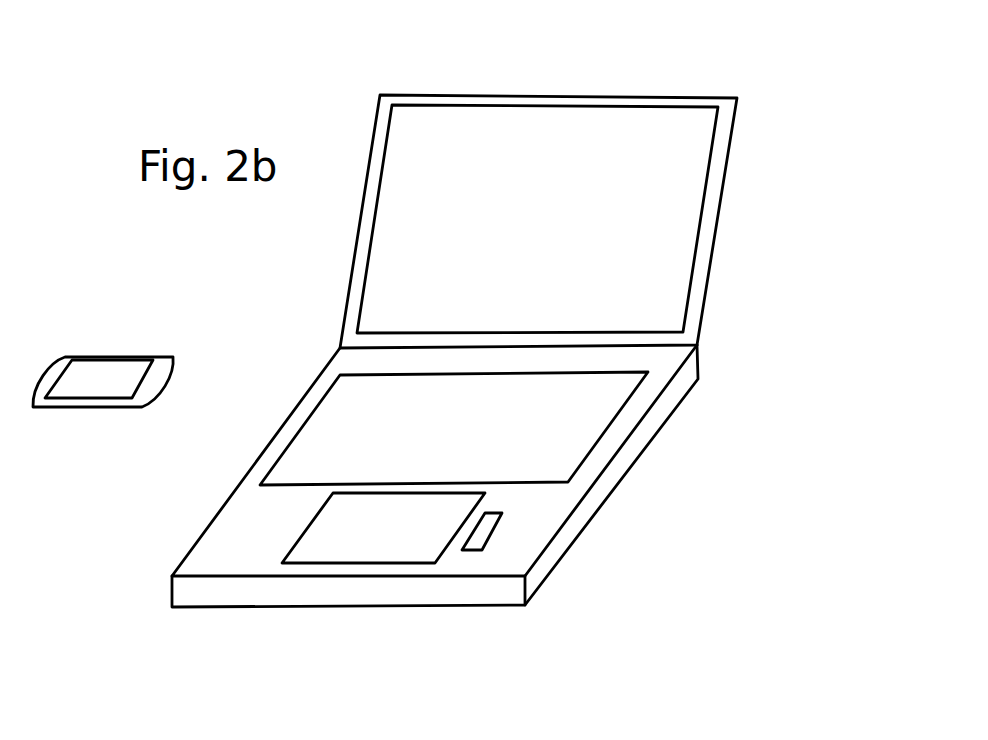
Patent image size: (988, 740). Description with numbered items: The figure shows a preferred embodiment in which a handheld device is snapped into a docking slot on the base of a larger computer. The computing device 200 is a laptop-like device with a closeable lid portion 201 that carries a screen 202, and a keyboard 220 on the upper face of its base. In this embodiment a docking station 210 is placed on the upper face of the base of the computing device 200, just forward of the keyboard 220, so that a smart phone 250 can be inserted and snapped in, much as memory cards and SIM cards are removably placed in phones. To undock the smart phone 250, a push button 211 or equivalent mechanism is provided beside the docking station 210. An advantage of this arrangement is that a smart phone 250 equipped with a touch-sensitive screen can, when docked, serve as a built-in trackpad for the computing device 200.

The computing device 200 is at (188, 608).
The closeable lid portion 201 is at (553, 93).
The screen 202 is at (708, 173).
The docking station 210 is at (312, 527).
The push button 211 is at (492, 530).
The keyboard 220 is at (603, 432).
The smart phone 250 is at (110, 357).